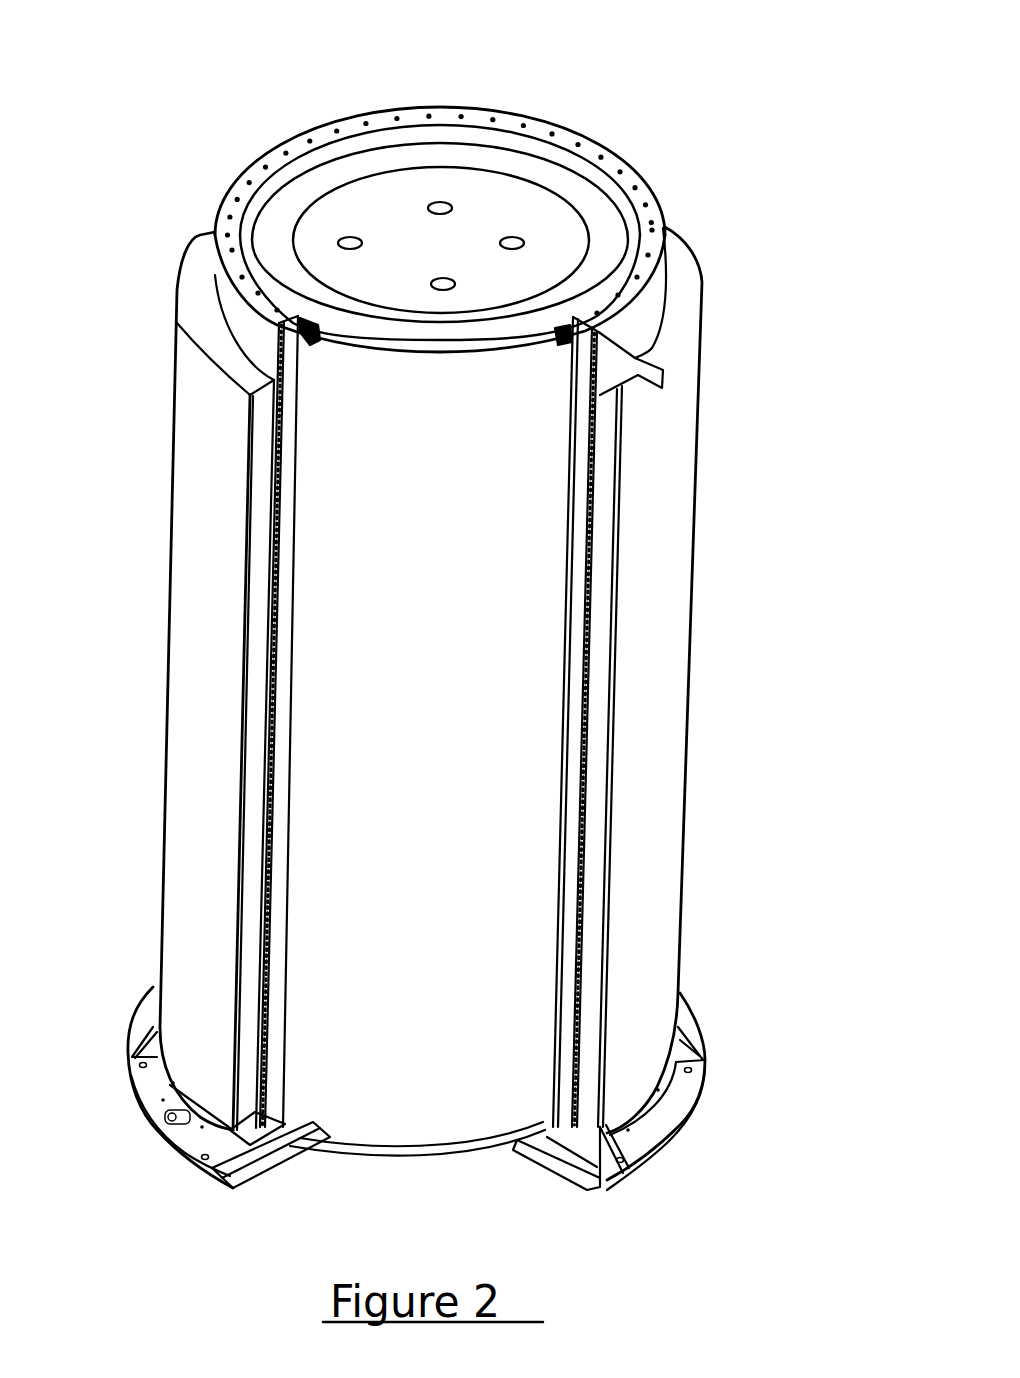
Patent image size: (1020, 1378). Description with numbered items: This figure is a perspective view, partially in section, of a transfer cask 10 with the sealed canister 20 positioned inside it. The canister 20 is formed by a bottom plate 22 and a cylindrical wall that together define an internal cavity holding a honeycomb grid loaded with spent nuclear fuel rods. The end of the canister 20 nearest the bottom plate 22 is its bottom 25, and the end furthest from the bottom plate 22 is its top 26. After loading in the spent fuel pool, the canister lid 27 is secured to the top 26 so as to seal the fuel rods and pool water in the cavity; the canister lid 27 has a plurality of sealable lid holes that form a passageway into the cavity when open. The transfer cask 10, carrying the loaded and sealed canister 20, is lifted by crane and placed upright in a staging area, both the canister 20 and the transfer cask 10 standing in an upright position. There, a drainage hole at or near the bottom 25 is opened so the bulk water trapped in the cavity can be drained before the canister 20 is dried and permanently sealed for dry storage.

The transfer cask 10 is at (698, 508).
The canister 20 is at (338, 562).
The bottom plate 22 is at (343, 1147).
The bottom end of canister 25 is at (468, 1092).
The top end of canister 26 is at (376, 373).
The canister lid 27 is at (512, 205).